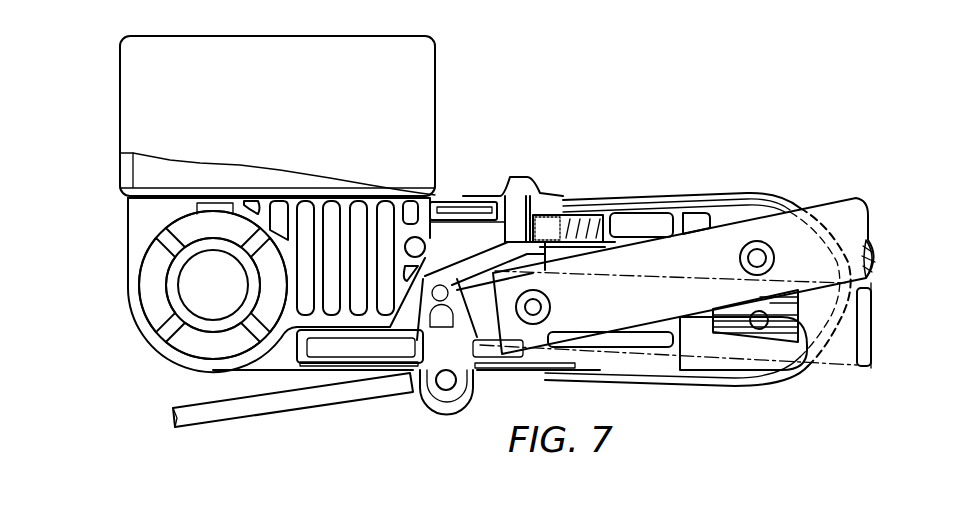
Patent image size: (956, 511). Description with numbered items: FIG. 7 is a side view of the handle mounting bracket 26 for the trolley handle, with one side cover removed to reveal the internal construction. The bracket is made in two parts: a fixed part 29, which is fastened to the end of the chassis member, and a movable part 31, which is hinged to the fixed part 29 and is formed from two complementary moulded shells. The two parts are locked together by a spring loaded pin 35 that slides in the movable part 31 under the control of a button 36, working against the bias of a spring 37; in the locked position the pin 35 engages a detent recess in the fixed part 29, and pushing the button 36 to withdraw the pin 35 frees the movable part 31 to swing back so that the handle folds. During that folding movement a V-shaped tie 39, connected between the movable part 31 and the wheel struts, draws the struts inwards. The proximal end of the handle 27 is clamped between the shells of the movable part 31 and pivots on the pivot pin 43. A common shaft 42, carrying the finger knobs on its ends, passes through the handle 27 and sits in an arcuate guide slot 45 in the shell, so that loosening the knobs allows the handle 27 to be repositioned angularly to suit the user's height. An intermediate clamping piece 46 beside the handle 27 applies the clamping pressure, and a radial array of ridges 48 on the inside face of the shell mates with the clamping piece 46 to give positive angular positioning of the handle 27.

The fixed part 29 is at (143, 208).
The spring loaded pin 35 is at (421, 242).
The button 36 is at (513, 180).
The spring 37 is at (562, 230).
The handle mounting bracket 26 is at (643, 185).
The intermediate clamping piece 46 is at (710, 222).
The common shaft 42 is at (757, 257).
The handle 27 is at (838, 215).
The pivot pin 43 is at (533, 311).
The movable part 31 is at (650, 360).
The arcuate guide slot 45 is at (763, 328).
The ridges 48 is at (798, 320).
The V-shaped tie 39 is at (227, 413).